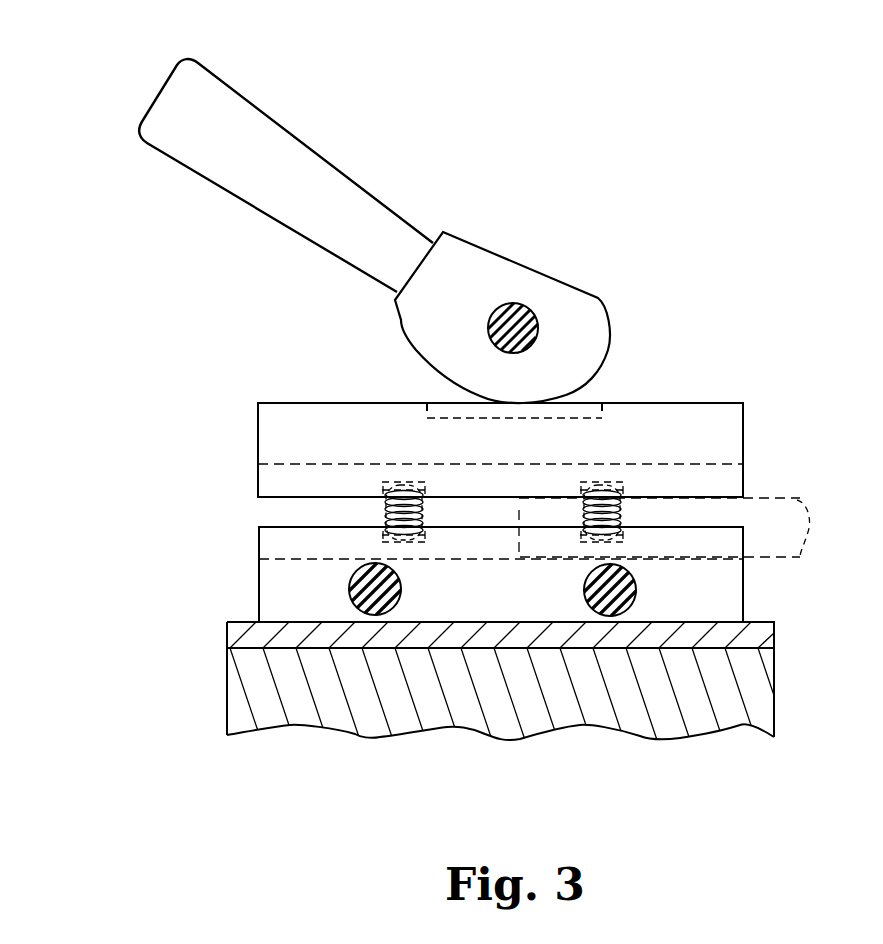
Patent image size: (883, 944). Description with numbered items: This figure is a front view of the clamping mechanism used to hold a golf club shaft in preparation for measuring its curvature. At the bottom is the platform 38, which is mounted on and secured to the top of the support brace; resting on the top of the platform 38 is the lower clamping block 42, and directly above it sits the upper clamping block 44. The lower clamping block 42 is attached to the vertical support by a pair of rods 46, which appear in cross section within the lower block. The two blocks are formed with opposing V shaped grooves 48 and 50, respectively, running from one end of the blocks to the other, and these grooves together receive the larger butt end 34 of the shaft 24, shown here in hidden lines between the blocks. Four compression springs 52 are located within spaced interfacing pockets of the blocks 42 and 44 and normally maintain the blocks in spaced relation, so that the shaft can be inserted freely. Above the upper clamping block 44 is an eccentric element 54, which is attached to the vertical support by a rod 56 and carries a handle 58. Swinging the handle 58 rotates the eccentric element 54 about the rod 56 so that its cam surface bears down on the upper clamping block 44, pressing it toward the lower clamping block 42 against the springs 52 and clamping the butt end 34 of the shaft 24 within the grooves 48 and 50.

The shaft 24 is at (788, 498).
The butt end 34 is at (758, 513).
The platform 38 is at (253, 637).
The lower clamping block 42 is at (270, 575).
The upper clamping block 44 is at (267, 440).
The rods 46 is at (349, 590).
The V shaped groove 48 is at (700, 552).
The V shaped groove 50 is at (310, 467).
The compression springs 52 is at (386, 500).
The eccentric element 54 is at (582, 320).
The rod 56 is at (507, 308).
The handle 58 is at (195, 92).